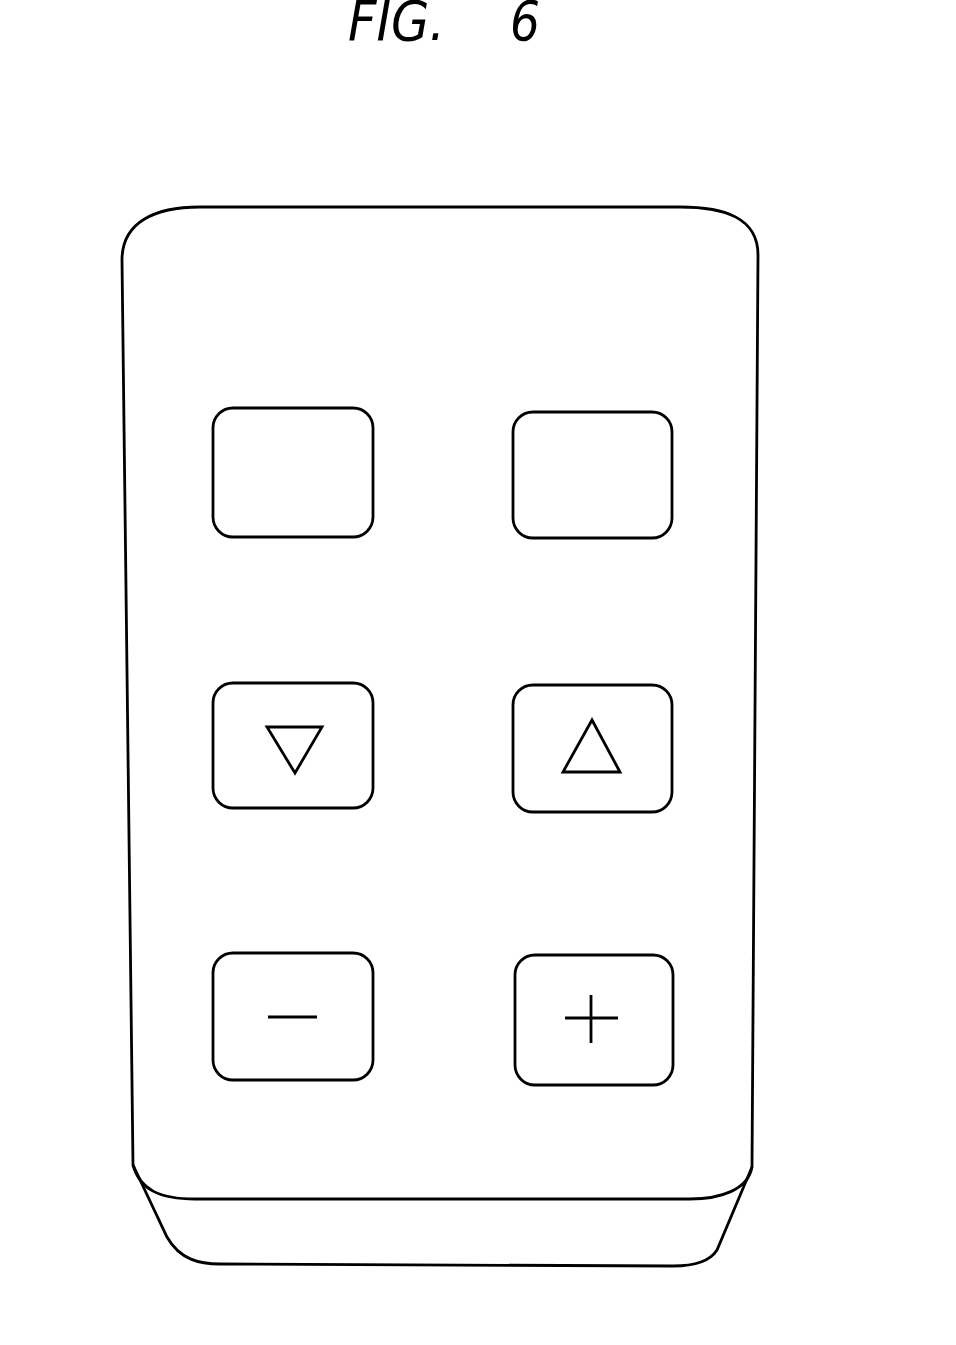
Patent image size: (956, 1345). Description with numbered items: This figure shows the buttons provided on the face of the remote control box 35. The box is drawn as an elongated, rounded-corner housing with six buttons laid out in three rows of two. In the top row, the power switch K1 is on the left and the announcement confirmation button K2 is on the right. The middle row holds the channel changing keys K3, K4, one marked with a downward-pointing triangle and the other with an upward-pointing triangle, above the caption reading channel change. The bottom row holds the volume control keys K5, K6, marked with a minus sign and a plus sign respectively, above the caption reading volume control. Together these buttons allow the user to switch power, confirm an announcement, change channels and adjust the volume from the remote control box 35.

The remote control box 35 is at (213, 207).
The power switch K1 is at (213, 461).
The announcement confirmation button K2 is at (672, 470).
The channel changing key K3 is at (213, 742).
The channel changing key K4 is at (672, 744).
The volume control key K5 is at (213, 1007).
The volume control key K6 is at (673, 1027).